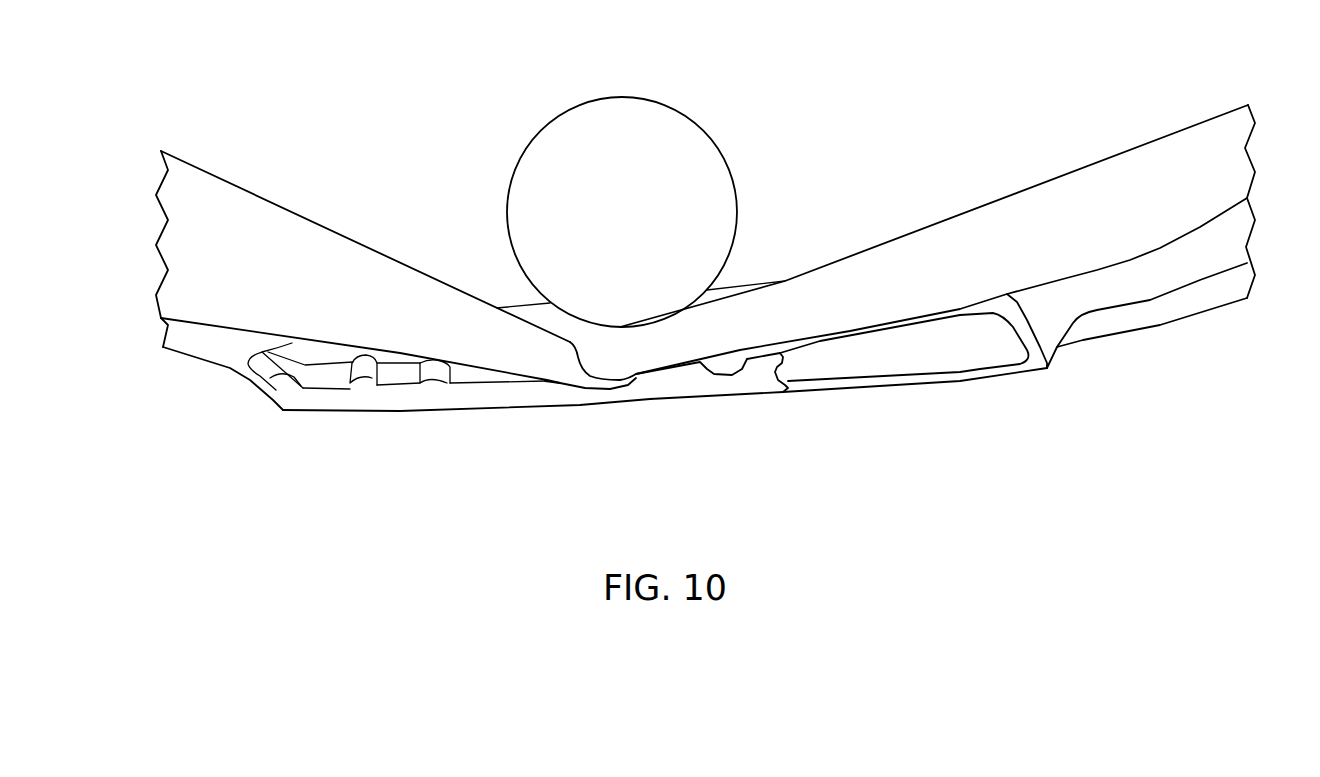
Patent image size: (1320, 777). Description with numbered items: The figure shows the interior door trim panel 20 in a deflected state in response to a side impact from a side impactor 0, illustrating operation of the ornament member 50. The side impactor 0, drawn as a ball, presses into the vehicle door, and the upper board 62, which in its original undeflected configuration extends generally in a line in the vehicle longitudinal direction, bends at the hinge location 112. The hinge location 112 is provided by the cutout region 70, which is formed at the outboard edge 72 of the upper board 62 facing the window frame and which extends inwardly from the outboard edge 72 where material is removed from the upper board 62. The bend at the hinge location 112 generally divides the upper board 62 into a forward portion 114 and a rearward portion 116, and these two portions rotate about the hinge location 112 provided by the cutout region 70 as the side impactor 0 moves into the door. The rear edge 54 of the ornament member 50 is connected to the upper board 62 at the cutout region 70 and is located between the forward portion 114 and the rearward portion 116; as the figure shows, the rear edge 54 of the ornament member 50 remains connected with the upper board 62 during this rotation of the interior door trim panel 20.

The side impactor 0 is at (622, 96).
The upper board 62 is at (311, 332).
The rear edge 54 is at (595, 362).
The ornament member 50 is at (1030, 242).
The forward portion 114 is at (1118, 347).
The interior door trim panel 20 is at (948, 405).
The cutout region 70 is at (627, 387).
The outboard edge 72 is at (558, 383).
The hinge location 112 is at (610, 407).
The rearward portion 116 is at (327, 405).